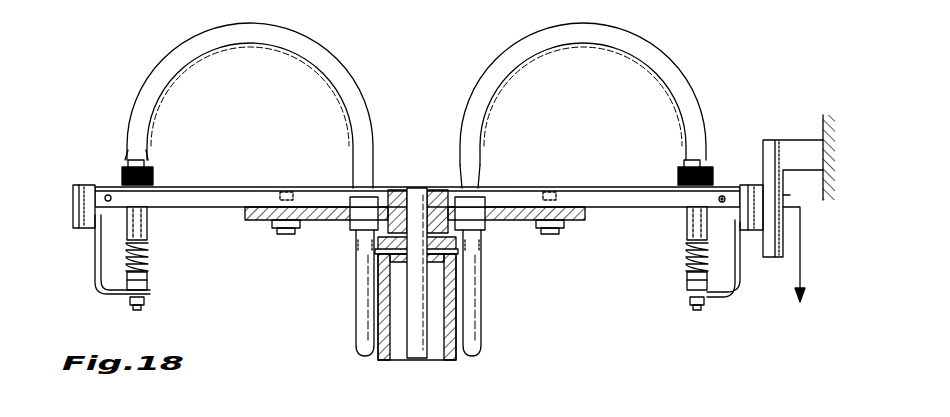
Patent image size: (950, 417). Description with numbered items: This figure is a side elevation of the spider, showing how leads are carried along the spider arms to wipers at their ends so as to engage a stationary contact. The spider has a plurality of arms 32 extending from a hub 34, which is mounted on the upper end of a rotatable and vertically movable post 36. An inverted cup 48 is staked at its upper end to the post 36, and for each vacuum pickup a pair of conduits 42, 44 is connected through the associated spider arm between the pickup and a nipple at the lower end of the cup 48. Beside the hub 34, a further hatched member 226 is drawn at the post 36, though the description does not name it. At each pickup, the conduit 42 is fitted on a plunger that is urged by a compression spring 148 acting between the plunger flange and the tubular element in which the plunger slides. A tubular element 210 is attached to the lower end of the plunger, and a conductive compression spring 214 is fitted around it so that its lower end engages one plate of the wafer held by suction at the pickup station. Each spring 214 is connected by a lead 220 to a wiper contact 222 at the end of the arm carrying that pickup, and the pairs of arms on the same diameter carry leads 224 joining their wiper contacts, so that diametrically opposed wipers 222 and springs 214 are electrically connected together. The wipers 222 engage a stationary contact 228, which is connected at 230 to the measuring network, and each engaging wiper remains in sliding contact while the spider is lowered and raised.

The spider arm 32 is at (227, 205).
The hub 34 is at (400, 190).
The post 36 is at (423, 188).
The conduit 42 is at (237, 33).
The conduit 44 is at (358, 285).
The inverted cup 48 is at (452, 318).
The compression spring 148 is at (149, 254).
The tubular element 210 is at (148, 288).
The conductive compression spring 214 is at (148, 300).
The lead 220 is at (95, 263).
The wiper contact 222 is at (73, 220).
The lead 224 is at (222, 187).
The bushing 226 is at (440, 190).
The stationary contact 228 is at (786, 196).
The connection to measuring network 230 is at (801, 250).